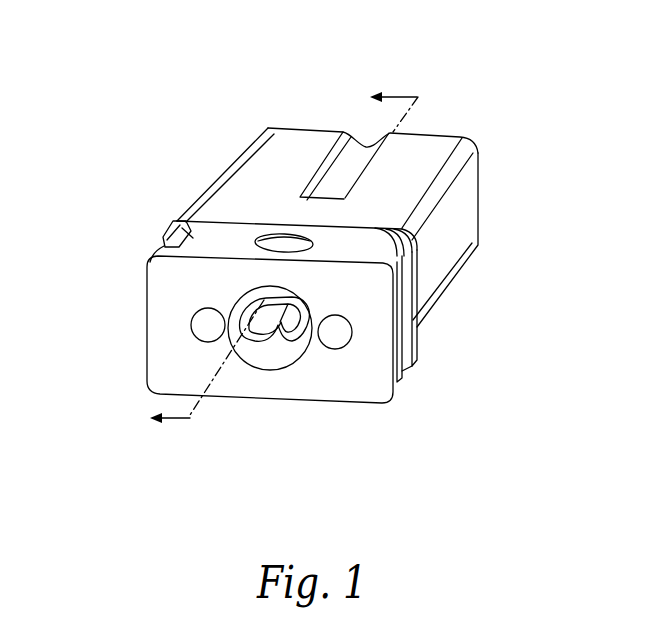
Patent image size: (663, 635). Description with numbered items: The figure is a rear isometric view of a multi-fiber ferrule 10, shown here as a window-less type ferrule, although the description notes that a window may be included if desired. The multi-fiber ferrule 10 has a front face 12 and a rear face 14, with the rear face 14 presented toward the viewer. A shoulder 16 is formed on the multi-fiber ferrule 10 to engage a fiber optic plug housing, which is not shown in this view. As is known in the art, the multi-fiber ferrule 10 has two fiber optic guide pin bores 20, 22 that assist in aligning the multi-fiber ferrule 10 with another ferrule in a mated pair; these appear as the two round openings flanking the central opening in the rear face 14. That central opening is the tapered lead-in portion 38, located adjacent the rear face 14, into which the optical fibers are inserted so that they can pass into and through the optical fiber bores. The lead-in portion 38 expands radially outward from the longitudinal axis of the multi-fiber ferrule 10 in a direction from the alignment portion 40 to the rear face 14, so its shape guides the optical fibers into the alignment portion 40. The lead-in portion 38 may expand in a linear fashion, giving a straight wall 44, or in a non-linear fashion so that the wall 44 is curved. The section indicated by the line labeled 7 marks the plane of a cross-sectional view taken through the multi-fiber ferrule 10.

The multi-fiber ferrule 10 is at (306, 254).
The front face 12 is at (358, 188).
The rear face 14 is at (314, 312).
The shoulder 16 is at (133, 240).
The fiber optic guide pin bore 20 is at (160, 335).
The fiber optic guide pin bore 22 is at (351, 392).
The tapered lead-in portion 38 is at (271, 390).
The alignment portion 40 is at (275, 381).
The wall 44 is at (299, 399).
The section line 7- 7 is at (284, 257).